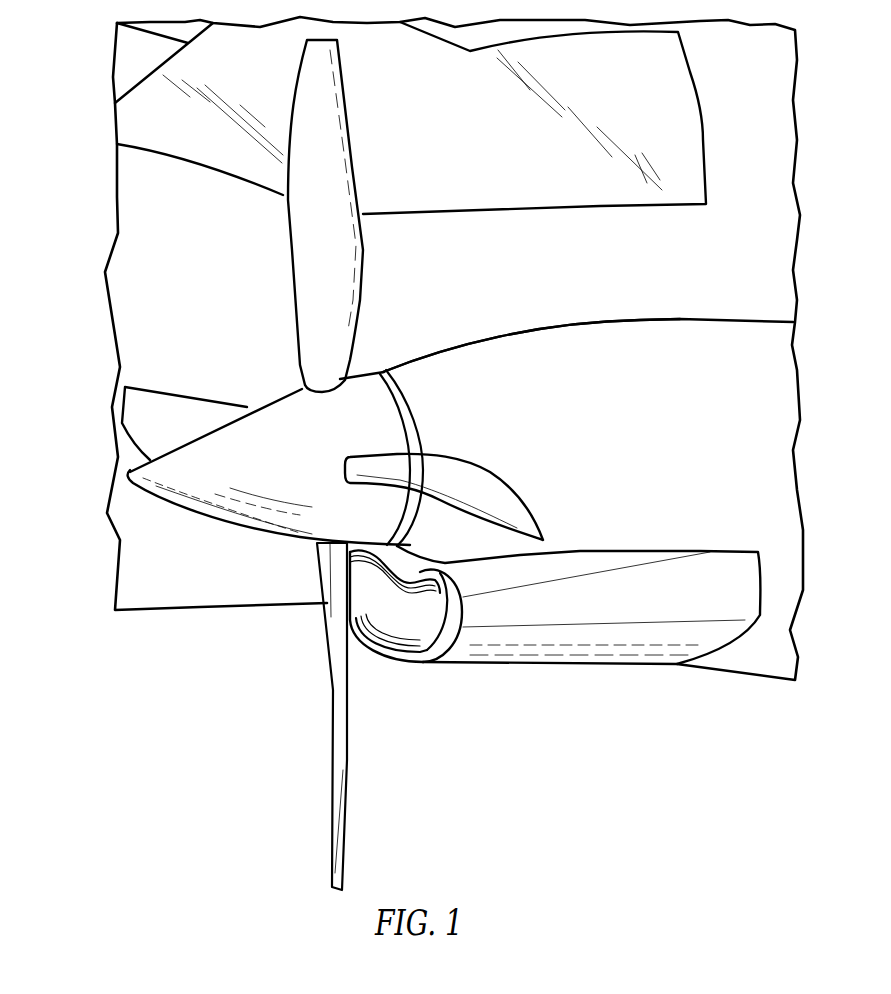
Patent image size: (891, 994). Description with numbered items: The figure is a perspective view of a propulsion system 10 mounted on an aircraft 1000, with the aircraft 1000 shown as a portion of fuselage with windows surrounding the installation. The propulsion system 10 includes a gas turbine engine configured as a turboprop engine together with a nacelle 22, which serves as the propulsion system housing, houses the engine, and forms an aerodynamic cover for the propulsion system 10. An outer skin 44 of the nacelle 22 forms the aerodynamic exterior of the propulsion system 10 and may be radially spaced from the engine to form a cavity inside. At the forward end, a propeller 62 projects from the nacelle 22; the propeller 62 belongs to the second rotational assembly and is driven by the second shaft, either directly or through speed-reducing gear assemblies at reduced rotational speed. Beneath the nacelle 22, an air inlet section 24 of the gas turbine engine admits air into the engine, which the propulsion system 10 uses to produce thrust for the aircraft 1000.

The aircraft 1000 is at (454, 348).
The propulsion system 10 is at (752, 384).
The outer skin 44 is at (602, 368).
The propeller 62 is at (235, 535).
The nacelle 22 is at (738, 505).
The air inlet section 24 is at (409, 673).